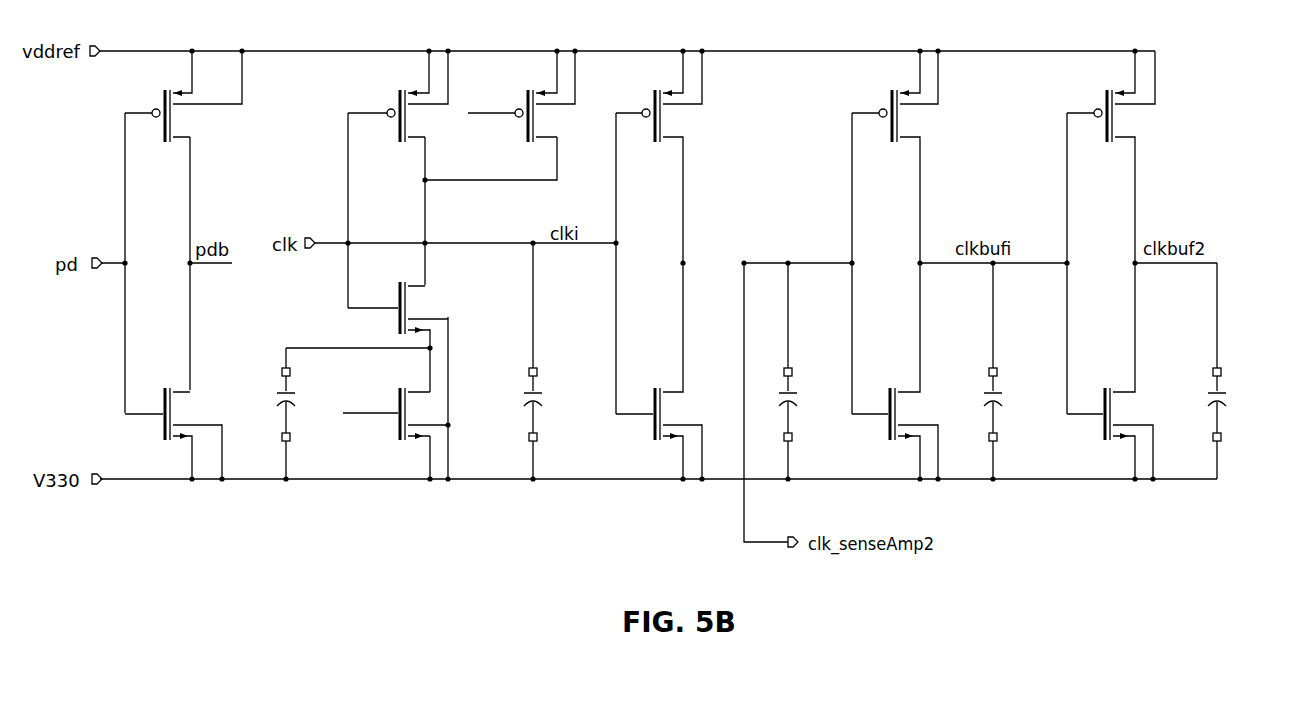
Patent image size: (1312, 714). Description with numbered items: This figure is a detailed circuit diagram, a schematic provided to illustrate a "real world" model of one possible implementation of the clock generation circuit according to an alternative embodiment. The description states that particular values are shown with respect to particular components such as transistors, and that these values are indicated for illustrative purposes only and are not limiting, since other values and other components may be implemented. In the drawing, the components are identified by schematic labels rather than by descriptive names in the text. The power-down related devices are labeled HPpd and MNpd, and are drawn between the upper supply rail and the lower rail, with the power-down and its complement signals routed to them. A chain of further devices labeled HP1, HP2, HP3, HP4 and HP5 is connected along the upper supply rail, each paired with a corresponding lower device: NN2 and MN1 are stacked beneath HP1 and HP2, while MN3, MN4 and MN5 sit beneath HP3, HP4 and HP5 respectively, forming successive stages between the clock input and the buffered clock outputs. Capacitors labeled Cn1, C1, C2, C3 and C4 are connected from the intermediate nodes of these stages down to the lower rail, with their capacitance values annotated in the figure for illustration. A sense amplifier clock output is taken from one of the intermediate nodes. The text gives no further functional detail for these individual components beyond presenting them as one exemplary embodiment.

The power-down PMOS transistor HPpd is at (173, 114).
The power-down NMOS transistor MNpd is at (183, 424).
The PMOS transistor HP1 is at (413, 114).
The PMOS transistor HP2 is at (539, 102).
The PMOS transistor HP3 is at (672, 157).
The PMOS transistor HP4 is at (907, 157).
The PMOS transistor HP5 is at (1124, 157).
The NMOS transistor NN2 is at (412, 304).
The NMOS transistor MN1 is at (425, 422).
The NMOS transistor MN3 is at (676, 371).
The NMOS transistor MN4 is at (912, 371).
The NMOS transistor MN5 is at (1126, 371).
The capacitor Cn1 is at (314, 413).
The capacitor C1 is at (557, 361).
The capacitor C2 is at (814, 371).
The capacitor C3 is at (1024, 371).
The capacitor C4 is at (1250, 371).